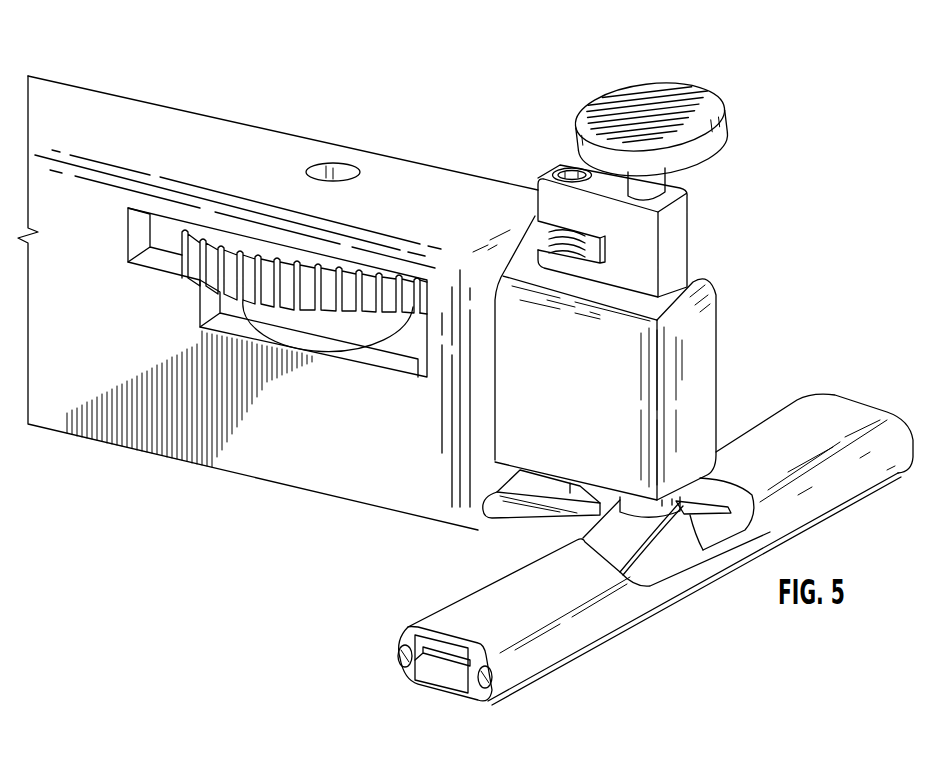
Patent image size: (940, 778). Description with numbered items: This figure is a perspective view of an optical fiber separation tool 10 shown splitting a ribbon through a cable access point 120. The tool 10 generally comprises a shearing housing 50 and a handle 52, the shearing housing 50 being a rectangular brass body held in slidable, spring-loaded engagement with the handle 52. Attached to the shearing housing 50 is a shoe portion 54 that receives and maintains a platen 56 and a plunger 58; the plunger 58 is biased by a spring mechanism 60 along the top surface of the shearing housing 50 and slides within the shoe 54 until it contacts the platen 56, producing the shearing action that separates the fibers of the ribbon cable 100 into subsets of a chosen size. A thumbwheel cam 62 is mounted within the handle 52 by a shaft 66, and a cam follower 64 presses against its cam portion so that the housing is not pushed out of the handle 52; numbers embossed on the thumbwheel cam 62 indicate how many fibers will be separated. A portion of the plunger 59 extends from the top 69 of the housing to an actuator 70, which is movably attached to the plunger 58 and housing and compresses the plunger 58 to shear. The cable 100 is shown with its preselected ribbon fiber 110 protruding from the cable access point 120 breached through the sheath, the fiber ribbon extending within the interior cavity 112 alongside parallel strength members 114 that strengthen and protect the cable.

The optical fiber separation tool 10 is at (130, 74).
The shearing housing 50 is at (700, 353).
The handle 52 is at (77, 433).
The shoe portion 54 is at (540, 517).
The platen 56 is at (690, 545).
The plunger 58 is at (717, 513).
The plunger portion 59 is at (653, 178).
The spring mechanism 60 is at (266, 258).
The thumbwheel cam 62 is at (260, 290).
The cam follower 64 is at (386, 292).
The shaft 66 is at (332, 303).
The top of housing 69 is at (602, 187).
The actuator 70 is at (700, 100).
The ribbon cable 100 is at (848, 397).
The ribbon fiber 110 is at (625, 540).
The interior cavity 112 is at (445, 675).
The strength members 114 is at (488, 678).
The cable access point 120 is at (660, 558).